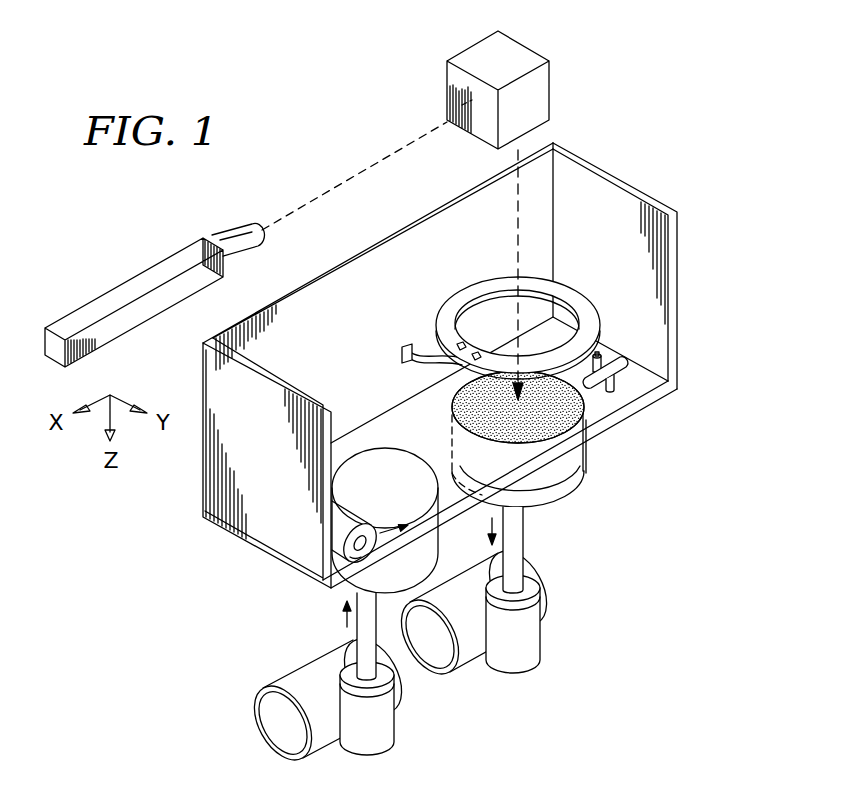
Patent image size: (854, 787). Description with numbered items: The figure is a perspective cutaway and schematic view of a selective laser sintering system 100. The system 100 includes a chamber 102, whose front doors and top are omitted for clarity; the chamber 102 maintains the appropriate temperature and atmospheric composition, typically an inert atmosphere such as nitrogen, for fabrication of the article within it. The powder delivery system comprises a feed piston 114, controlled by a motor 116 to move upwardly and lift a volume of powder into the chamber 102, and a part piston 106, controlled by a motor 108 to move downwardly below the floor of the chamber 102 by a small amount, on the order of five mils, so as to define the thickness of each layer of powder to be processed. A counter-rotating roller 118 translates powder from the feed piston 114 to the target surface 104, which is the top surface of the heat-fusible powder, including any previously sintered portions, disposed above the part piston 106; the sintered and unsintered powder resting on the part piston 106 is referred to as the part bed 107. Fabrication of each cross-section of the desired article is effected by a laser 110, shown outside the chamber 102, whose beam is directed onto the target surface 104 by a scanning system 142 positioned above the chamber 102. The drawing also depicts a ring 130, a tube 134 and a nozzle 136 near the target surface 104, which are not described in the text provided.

The selective laser sintering system 100 is at (705, 334).
The chamber 102 is at (640, 192).
The target surface 104 is at (457, 388).
The part piston 106 is at (562, 490).
The part bed 107 is at (465, 451).
The motor 108 is at (544, 632).
The laser 110 is at (122, 293).
The feed piston 114 is at (348, 584).
The motor 116 is at (398, 718).
The roller 118 is at (357, 513).
The ring heater 130 is at (452, 302).
The gas supply tube 134 is at (626, 377).
The gas nozzle 136 is at (599, 355).
The scanning system 142 is at (478, 53).